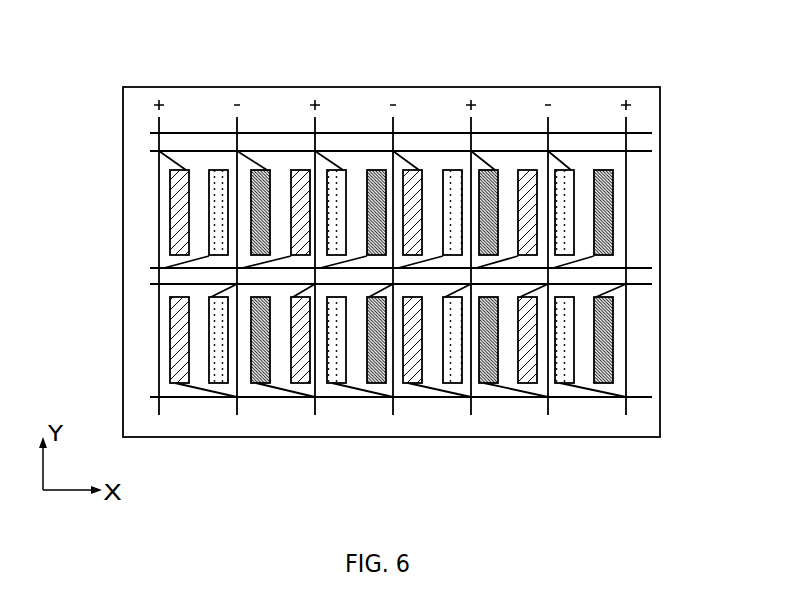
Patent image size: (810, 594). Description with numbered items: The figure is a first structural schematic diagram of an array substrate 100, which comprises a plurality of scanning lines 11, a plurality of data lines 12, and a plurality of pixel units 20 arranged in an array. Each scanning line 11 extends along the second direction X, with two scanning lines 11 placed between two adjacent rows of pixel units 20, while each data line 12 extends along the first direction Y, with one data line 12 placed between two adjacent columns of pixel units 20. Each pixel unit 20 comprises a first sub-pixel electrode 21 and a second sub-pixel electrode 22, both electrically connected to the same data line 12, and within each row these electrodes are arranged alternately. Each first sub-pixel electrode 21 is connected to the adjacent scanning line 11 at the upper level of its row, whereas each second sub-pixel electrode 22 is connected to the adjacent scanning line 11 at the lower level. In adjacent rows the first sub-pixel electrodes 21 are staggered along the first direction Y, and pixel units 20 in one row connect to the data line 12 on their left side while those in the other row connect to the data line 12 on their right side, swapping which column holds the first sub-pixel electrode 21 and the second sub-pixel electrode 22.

The array substrate 100 is at (163, 34).
The scanning line 11 is at (640, 152).
The data line 12 is at (625, 197).
The pixel unit 20 is at (130, 276).
The first sub-pixel electrode 21 is at (179, 190).
The second sub-pixel electrode 22 is at (213, 232).